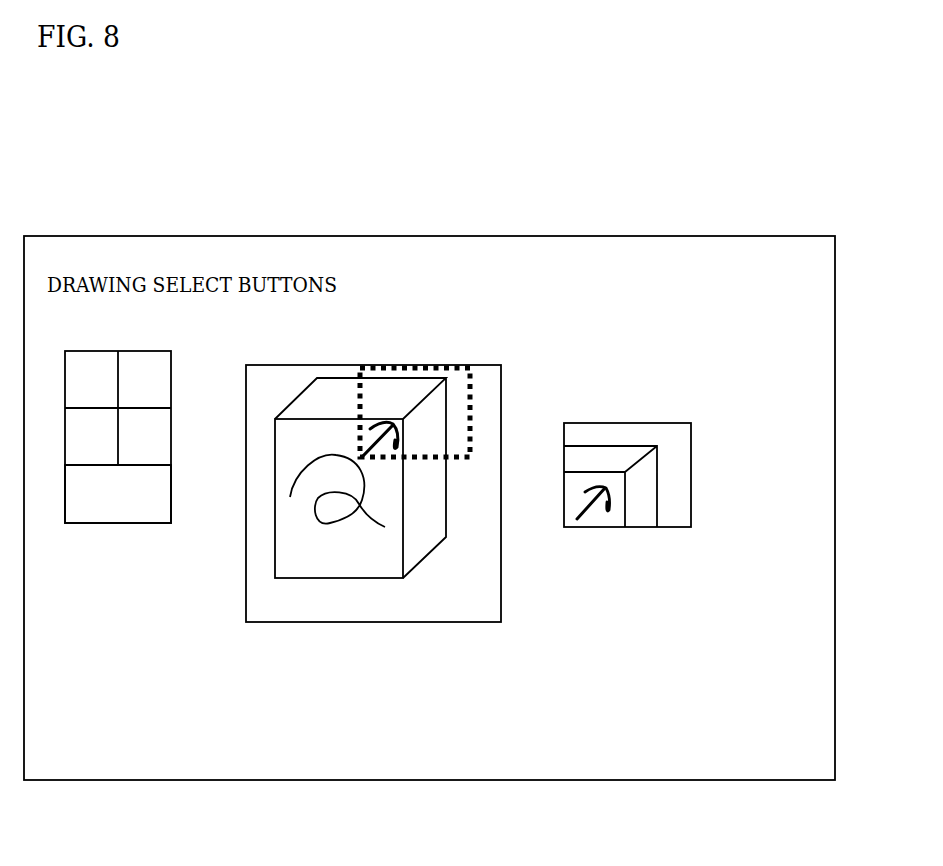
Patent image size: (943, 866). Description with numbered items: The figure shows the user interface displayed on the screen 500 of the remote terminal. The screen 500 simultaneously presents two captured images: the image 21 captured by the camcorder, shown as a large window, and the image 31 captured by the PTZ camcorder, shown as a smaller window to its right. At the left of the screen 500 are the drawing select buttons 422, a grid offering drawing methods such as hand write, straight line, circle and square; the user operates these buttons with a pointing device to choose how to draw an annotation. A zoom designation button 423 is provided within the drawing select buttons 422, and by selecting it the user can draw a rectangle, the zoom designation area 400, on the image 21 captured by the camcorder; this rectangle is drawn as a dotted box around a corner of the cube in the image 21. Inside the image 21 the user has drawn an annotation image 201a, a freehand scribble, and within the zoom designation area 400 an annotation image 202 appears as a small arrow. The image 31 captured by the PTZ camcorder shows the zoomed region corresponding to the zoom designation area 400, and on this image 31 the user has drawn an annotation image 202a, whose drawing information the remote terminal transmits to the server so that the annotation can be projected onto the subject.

The screen 500 is at (403, 236).
The drawing select buttons 422 is at (83, 351).
The zoom designation button 423 is at (86, 514).
The image captured by the camcorder 21 is at (287, 365).
The annotation image 202 is at (398, 410).
The zoom designation area 400 is at (470, 380).
The image captured by the PTZ camcorder 31 is at (600, 423).
The annotation image drawn 202a is at (592, 520).
The annotation image drawn 201a is at (302, 525).